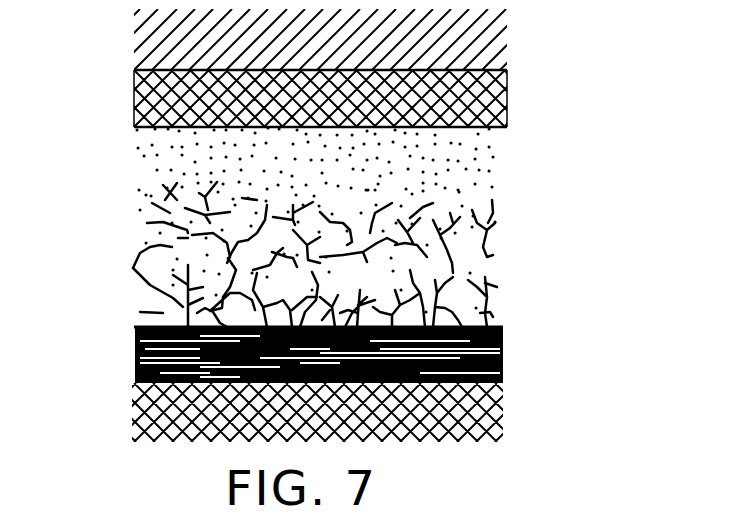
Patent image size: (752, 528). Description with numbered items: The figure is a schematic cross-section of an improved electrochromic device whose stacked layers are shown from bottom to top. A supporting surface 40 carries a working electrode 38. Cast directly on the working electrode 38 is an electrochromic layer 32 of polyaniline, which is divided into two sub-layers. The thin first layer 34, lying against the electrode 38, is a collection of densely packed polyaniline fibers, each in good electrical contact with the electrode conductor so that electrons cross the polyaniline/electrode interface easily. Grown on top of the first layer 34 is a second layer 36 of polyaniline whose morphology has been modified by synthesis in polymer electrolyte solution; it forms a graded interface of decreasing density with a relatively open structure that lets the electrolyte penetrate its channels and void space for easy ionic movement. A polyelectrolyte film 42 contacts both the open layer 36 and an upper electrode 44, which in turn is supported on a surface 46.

The electrochromic layer 32 is at (315, 254).
The dense polyaniline layer 34 is at (520, 299).
The open-structure polyaniline layer 36 is at (519, 229).
The working electrode 38 is at (503, 372).
The supporting surface 40 is at (503, 425).
The polyelectrolyte film 42 is at (508, 163).
The electrode 44 is at (510, 100).
The supporting surface 46 is at (512, 43).